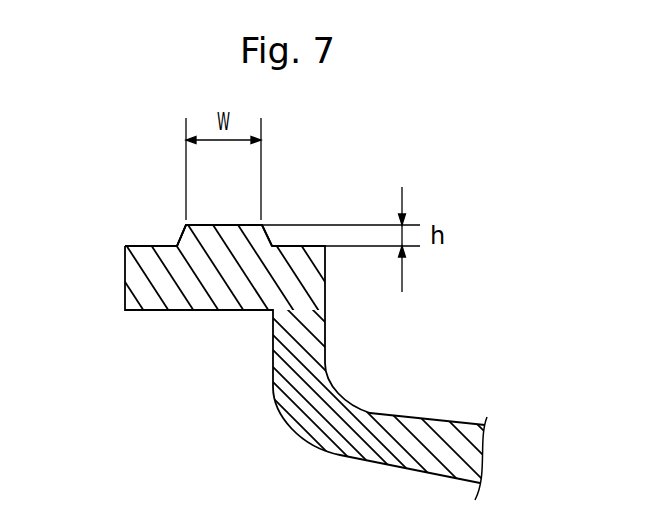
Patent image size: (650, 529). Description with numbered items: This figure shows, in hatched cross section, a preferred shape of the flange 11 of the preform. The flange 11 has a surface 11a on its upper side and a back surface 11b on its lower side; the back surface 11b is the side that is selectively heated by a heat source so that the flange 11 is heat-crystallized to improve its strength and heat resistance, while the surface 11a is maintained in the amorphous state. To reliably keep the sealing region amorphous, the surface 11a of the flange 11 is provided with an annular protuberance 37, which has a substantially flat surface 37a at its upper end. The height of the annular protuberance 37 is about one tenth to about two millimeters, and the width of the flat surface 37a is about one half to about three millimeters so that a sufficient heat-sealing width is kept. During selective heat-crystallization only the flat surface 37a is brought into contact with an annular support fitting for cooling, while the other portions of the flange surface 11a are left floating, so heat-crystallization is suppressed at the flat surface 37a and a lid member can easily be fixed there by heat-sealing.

The flange 11 is at (137, 272).
The surface of flange 11a is at (143, 247).
The back surface of flange 11b is at (227, 310).
The annular protuberance 37 is at (234, 235).
The flat surface 37a is at (207, 224).